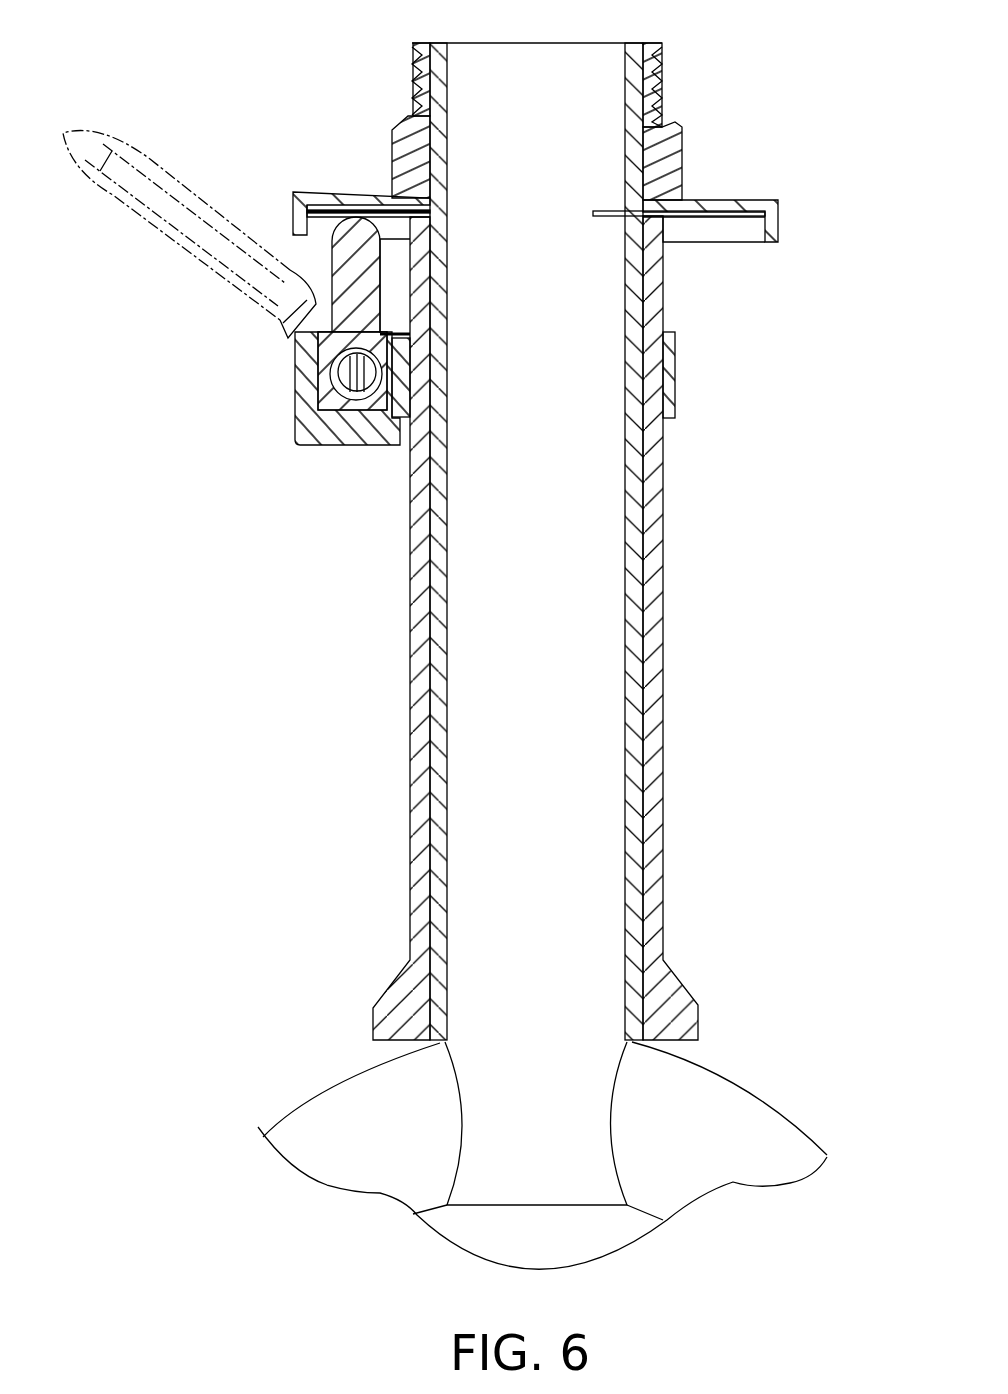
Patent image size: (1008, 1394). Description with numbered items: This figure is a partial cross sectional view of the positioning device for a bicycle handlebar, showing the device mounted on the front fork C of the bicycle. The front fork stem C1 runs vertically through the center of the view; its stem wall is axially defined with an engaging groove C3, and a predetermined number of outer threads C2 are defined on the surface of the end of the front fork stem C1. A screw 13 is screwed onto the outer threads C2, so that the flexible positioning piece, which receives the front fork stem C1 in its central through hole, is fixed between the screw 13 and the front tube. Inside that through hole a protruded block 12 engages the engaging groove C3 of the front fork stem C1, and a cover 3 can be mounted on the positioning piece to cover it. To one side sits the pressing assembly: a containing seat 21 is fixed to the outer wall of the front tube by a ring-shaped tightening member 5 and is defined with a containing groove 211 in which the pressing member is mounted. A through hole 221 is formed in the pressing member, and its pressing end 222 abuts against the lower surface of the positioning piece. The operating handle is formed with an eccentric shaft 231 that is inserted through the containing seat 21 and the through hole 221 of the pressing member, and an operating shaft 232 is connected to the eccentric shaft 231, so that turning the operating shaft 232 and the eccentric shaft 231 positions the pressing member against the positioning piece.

The front fork C is at (778, 1090).
The front fork stem C1 is at (633, 840).
The outer threads C2 is at (418, 52).
The engaging groove C3 is at (633, 148).
The screw 13 is at (403, 170).
The protruded block 12 is at (606, 212).
The cover 3 is at (767, 203).
The tightening member 5 is at (673, 378).
The containing seat 21 is at (317, 435).
The containing groove 211 is at (388, 330).
The through hole 221 is at (358, 397).
The pressing end 222 is at (350, 228).
The eccentric shaft 231 is at (357, 353).
The operating shaft 232 is at (133, 210).